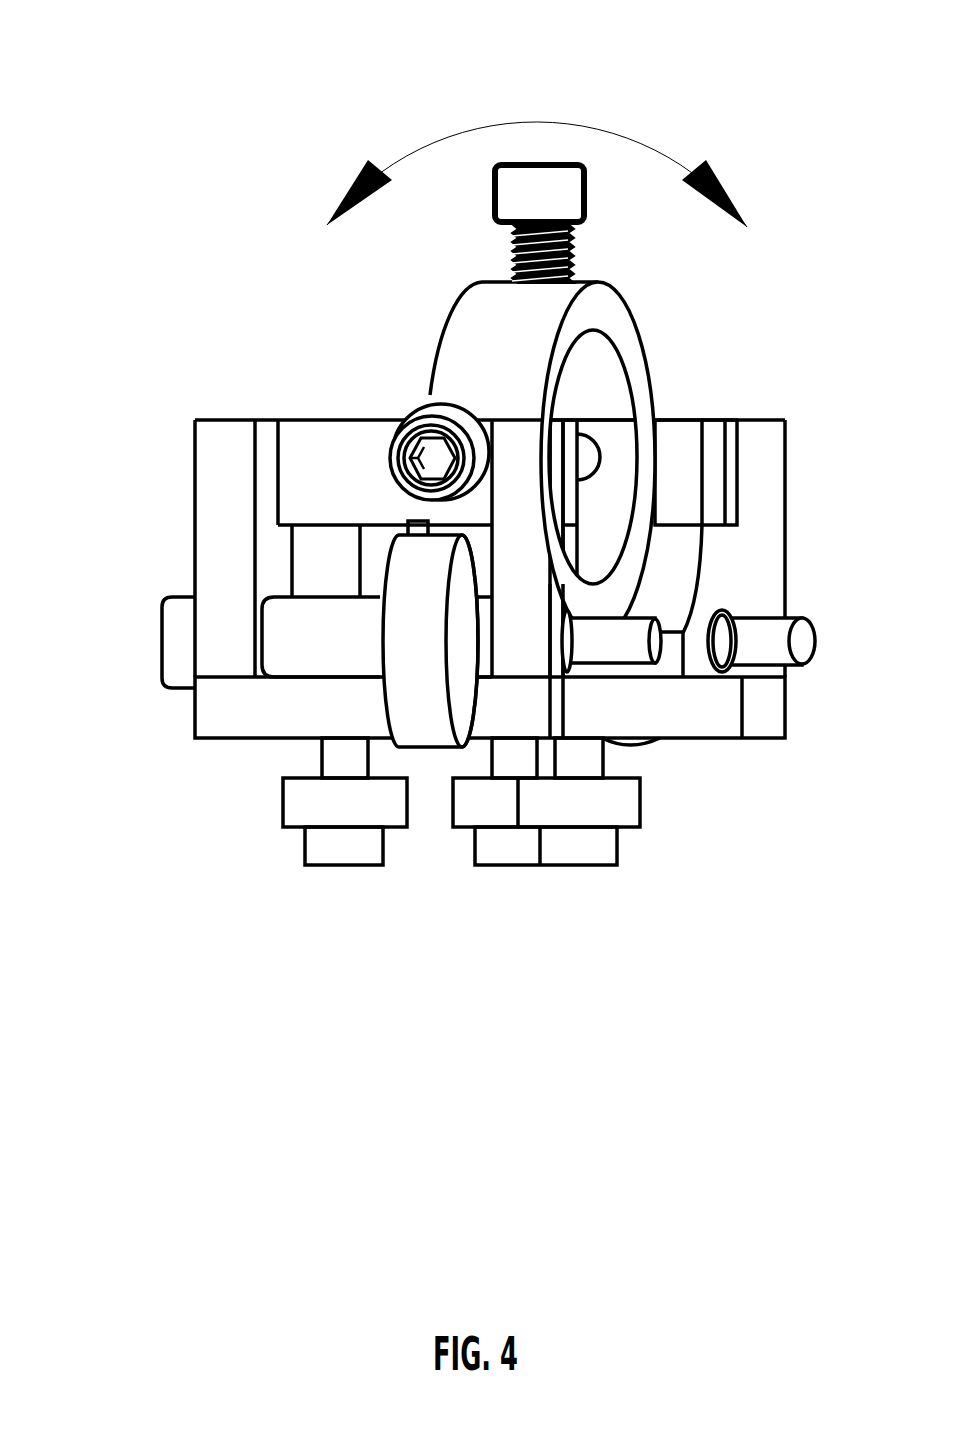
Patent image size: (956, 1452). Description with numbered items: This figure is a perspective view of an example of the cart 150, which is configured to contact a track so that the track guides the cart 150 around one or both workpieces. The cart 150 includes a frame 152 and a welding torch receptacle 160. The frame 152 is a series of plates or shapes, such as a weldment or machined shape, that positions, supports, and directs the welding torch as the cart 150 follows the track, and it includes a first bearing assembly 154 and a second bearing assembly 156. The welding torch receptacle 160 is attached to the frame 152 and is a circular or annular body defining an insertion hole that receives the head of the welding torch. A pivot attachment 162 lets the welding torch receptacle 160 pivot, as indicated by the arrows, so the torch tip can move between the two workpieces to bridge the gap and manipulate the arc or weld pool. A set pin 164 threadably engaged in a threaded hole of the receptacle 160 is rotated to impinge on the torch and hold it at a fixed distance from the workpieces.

The cart 150 is at (196, 139).
The frame 152 is at (213, 468).
The first bearing assembly 154 is at (283, 798).
The second bearing assembly 156 is at (417, 588).
The welding torch receptacle 160 is at (605, 307).
The pivot attachment 162 is at (412, 418).
The set pin 164 is at (547, 162).